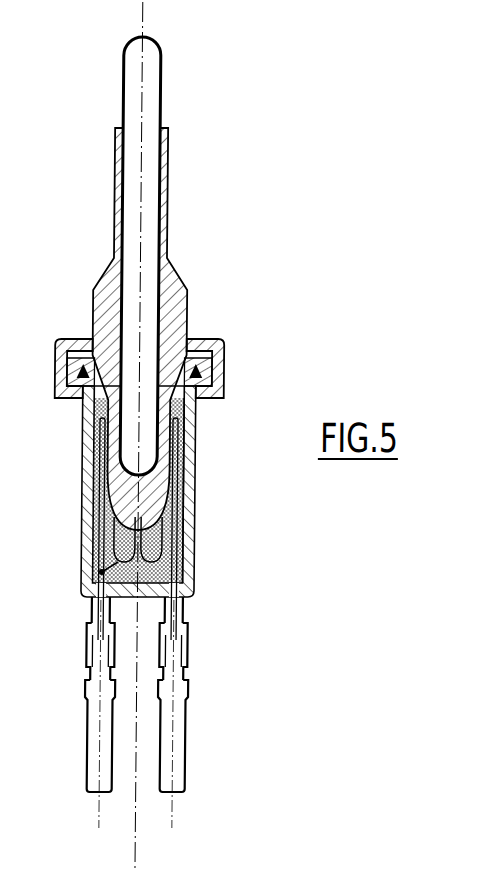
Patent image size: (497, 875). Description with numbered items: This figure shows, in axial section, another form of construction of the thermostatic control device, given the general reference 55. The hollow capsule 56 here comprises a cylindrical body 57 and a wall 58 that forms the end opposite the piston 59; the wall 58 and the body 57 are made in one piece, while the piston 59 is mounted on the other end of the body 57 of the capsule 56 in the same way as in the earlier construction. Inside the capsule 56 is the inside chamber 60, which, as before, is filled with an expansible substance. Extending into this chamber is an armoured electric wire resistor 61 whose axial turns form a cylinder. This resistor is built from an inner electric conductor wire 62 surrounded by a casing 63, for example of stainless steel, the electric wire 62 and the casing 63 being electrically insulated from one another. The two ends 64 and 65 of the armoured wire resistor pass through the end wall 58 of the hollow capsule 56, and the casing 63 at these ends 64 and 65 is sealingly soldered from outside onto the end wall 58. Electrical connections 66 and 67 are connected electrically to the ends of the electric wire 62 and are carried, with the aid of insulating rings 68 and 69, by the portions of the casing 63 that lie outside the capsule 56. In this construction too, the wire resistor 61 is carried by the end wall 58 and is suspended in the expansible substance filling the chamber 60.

The thermostatic control device 55 is at (246, 351).
The hollow capsule 56 is at (202, 485).
The cylindrical body 57 is at (190, 525).
The wall 58 is at (158, 587).
The piston 59 is at (146, 92).
The inside chamber 60 is at (201, 412).
The armoured electric wire resistor 61 is at (104, 574).
The inner electric conductor wire 62 is at (193, 663).
The casing 63 is at (107, 490).
The end of armoured wire resistor 64 is at (101, 598).
The end of armoured wire resistor 65 is at (188, 602).
The electrical connection 66 is at (107, 735).
The electrical connection 67 is at (184, 738).
The insulating ring 68 is at (98, 645).
The insulating ring 69 is at (196, 647).